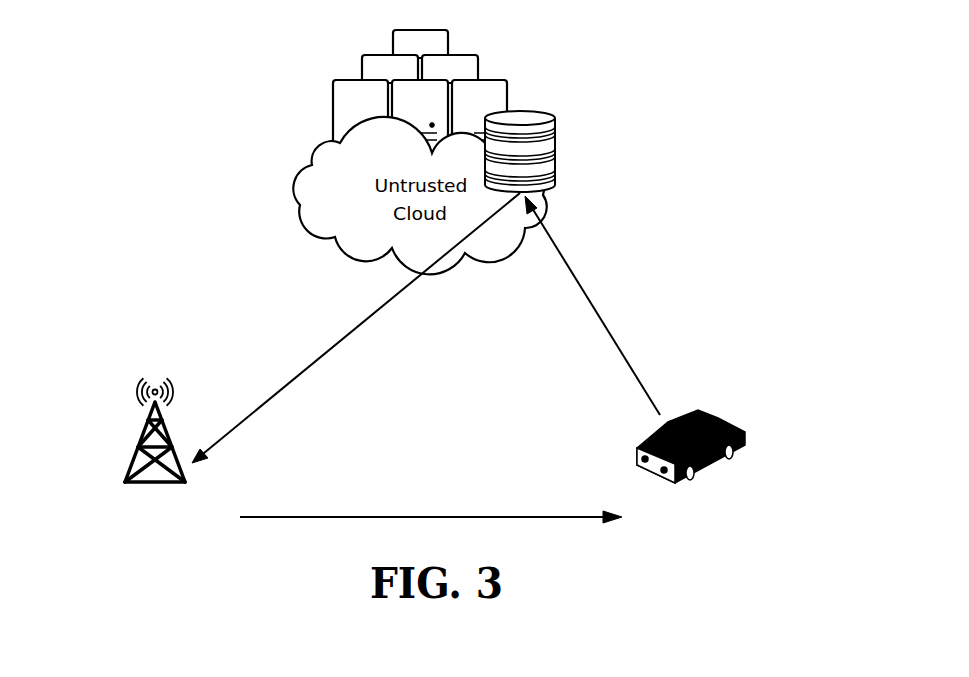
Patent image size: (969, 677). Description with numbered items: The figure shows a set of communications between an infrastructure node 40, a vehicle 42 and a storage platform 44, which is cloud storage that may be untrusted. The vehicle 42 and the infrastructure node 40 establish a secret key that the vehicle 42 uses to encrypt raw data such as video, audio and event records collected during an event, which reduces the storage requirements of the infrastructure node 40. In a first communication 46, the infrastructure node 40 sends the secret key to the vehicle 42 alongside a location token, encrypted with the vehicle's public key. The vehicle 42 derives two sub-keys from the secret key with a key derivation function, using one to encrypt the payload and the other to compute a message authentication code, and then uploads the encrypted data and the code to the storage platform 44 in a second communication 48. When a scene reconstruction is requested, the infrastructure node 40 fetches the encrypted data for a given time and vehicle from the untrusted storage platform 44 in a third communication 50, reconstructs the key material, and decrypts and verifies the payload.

The infrastructure node 40 is at (140, 447).
The vehicle 42 is at (748, 440).
The storage platform 44 is at (556, 142).
The first communication 46 is at (325, 518).
The second communication 48 is at (613, 338).
The third communication 50 is at (305, 368).